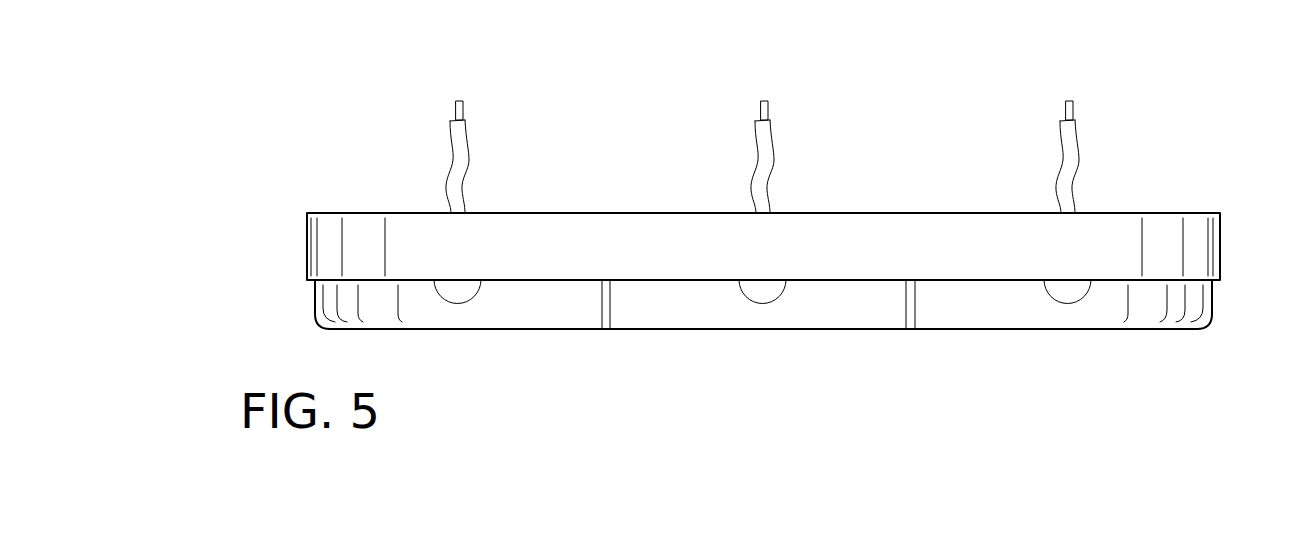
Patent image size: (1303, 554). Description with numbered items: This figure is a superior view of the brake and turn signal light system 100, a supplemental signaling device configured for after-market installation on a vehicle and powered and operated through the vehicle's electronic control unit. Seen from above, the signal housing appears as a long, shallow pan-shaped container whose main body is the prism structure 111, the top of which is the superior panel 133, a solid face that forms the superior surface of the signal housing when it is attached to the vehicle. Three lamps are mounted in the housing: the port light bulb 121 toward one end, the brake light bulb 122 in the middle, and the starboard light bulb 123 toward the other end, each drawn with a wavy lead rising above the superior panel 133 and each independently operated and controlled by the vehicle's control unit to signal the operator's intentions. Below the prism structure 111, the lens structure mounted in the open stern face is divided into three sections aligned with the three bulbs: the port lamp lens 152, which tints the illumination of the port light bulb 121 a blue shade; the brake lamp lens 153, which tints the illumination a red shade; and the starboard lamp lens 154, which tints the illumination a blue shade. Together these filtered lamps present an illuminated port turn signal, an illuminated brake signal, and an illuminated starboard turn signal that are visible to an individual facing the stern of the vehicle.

The brake and turn signal light system 100 is at (197, 162).
The prism structure 111 is at (1167, 230).
The superior panel 133 is at (862, 248).
The port light bulb 121 is at (458, 297).
The brake light bulb 122 is at (762, 295).
The starboard light bulb 123 is at (1070, 292).
The port lamp lens 152 is at (498, 330).
The brake lamp lens 153 is at (637, 330).
The starboard lamp lens 154 is at (965, 330).